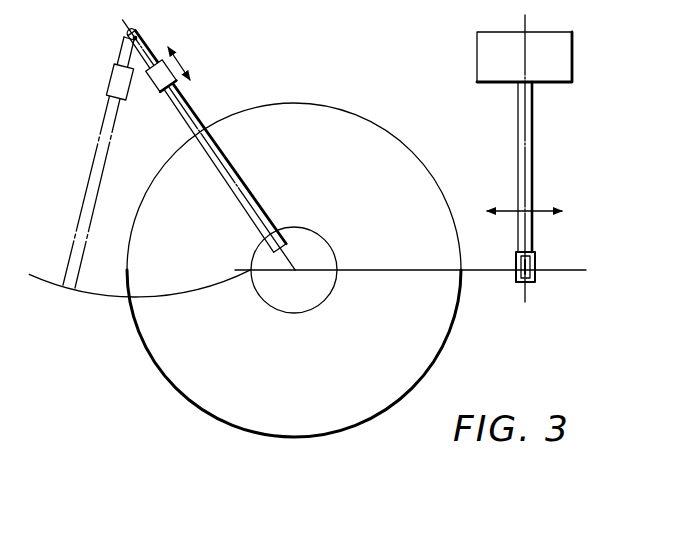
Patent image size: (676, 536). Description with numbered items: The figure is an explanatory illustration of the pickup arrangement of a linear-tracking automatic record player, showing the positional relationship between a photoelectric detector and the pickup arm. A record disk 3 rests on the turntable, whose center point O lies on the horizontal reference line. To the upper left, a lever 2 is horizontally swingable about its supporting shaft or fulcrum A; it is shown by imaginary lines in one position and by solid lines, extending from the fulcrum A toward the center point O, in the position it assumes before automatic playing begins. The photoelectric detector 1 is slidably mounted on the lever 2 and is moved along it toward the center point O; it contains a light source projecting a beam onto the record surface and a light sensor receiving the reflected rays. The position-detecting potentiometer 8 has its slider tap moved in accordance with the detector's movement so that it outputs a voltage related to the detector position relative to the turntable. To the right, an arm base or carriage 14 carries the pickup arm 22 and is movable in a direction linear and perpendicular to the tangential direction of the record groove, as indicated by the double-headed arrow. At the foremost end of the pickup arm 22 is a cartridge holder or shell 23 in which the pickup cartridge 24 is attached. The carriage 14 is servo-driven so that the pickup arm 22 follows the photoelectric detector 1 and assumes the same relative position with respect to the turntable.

The photoelectric detector 1 is at (155, 95).
The lever 2 is at (186, 100).
The record disk 3 is at (442, 352).
The position-detecting potentiometer 8 is at (167, 313).
The arm base or carriage 14 is at (547, 32).
The pickup arm 22 is at (533, 152).
The cartridge holder or shell 23 is at (532, 282).
The pickup cartridge 24 is at (533, 258).
The supporting shaft or fulcrum A is at (136, 34).
The center point of the turntable O is at (293, 272).